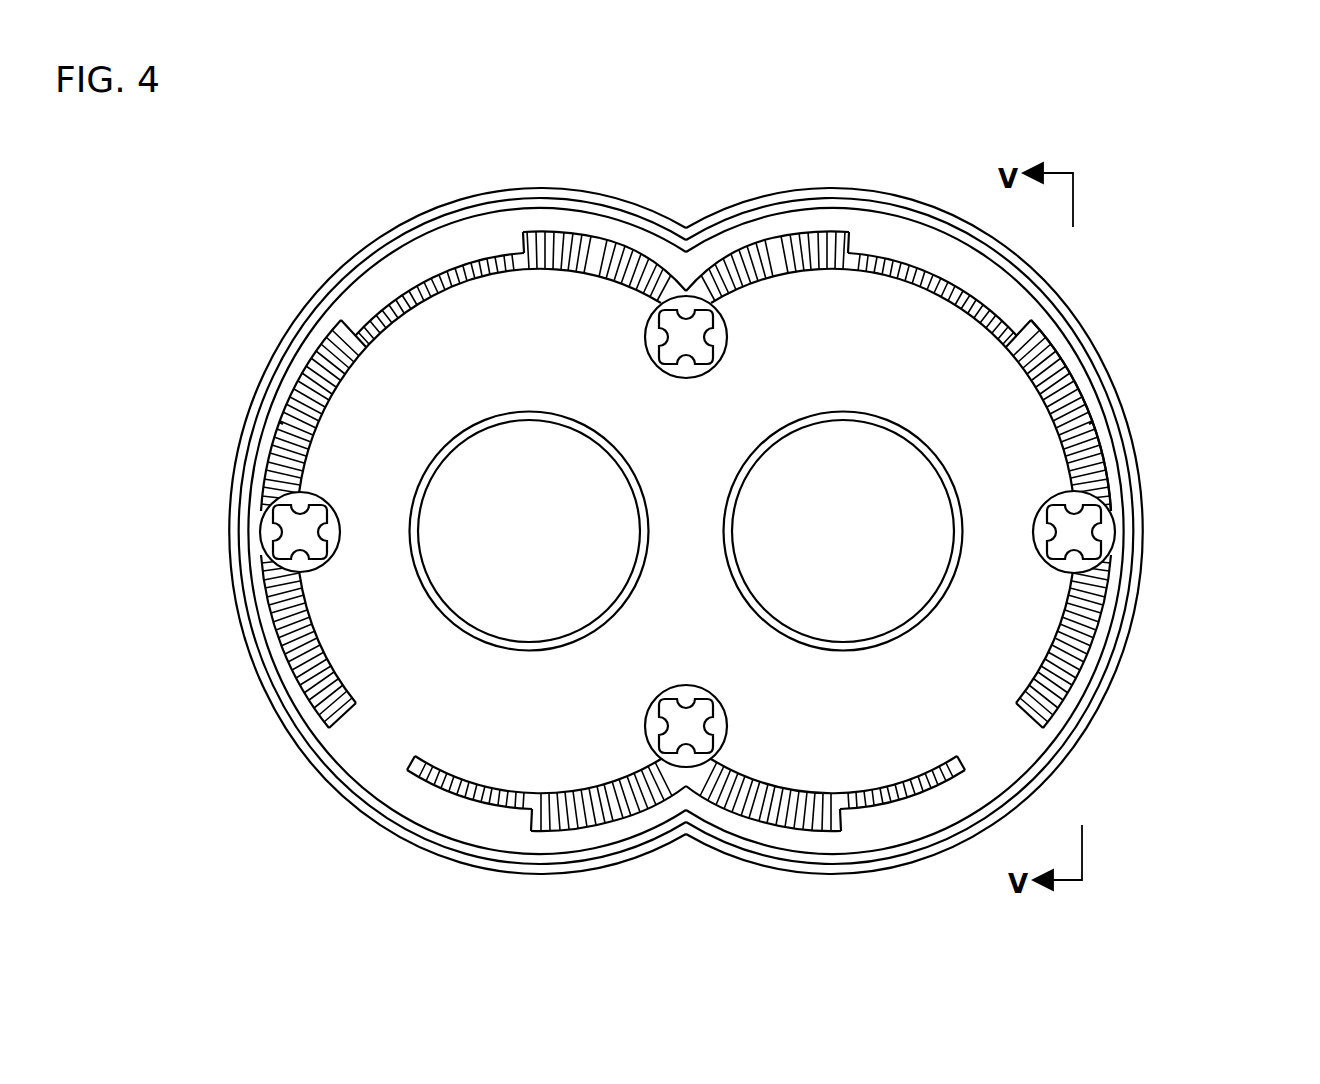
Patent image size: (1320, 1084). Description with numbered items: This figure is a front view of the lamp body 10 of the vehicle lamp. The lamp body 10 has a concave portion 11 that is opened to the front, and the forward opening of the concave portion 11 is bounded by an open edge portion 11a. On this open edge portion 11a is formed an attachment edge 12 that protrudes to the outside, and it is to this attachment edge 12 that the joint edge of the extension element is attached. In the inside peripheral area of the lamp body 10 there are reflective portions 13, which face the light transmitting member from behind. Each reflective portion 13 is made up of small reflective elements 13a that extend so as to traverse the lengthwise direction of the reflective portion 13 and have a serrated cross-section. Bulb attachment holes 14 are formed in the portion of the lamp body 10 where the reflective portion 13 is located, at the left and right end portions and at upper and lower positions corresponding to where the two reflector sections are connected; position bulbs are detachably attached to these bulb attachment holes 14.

The lamp body 10 is at (1027, 270).
The concave portion 11 is at (973, 347).
The open edge portion 11a is at (1072, 390).
The attachment edge 12 is at (1140, 462).
The reflective portion 13 is at (588, 236).
The reflective element 13a is at (528, 232).
The bulb attachment hole 14 is at (685, 322).